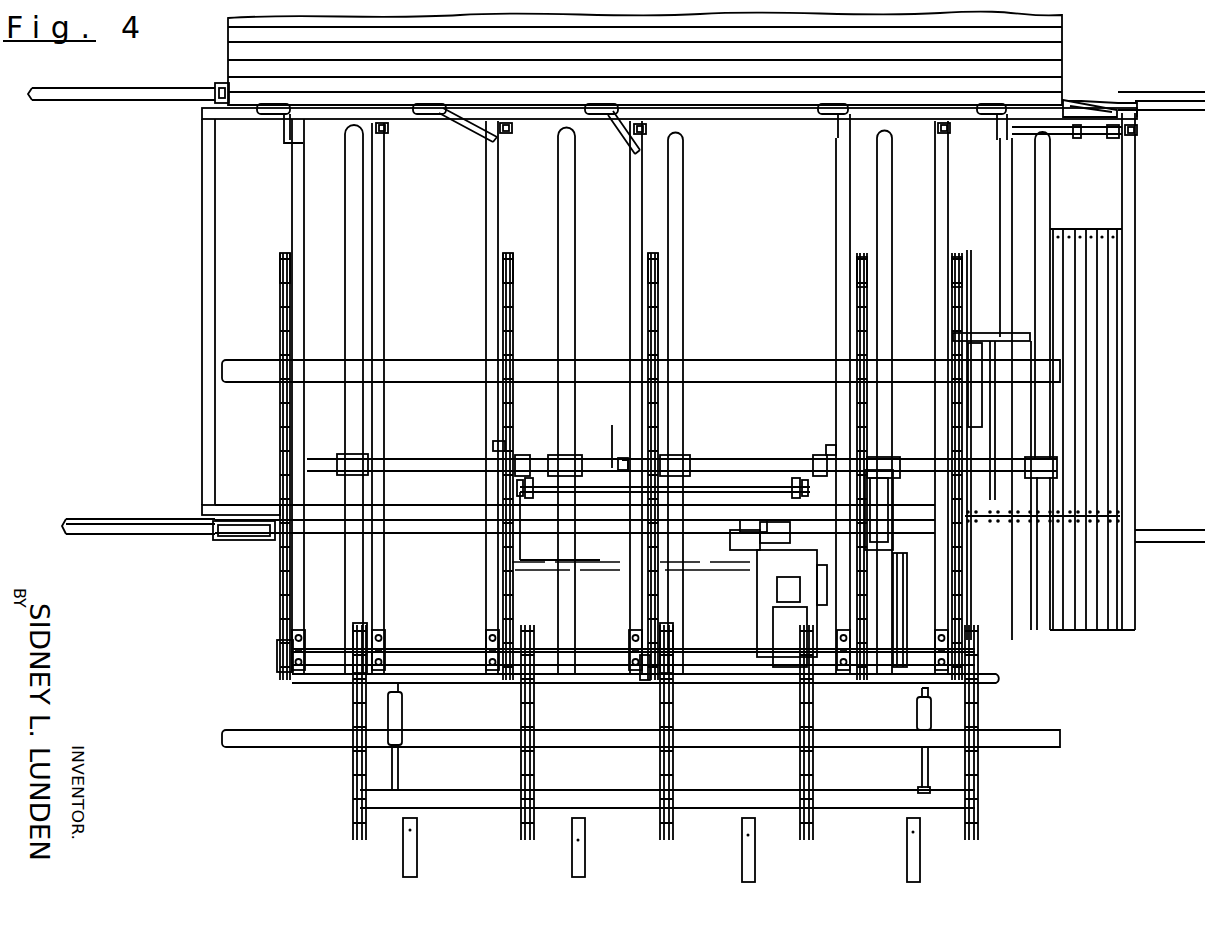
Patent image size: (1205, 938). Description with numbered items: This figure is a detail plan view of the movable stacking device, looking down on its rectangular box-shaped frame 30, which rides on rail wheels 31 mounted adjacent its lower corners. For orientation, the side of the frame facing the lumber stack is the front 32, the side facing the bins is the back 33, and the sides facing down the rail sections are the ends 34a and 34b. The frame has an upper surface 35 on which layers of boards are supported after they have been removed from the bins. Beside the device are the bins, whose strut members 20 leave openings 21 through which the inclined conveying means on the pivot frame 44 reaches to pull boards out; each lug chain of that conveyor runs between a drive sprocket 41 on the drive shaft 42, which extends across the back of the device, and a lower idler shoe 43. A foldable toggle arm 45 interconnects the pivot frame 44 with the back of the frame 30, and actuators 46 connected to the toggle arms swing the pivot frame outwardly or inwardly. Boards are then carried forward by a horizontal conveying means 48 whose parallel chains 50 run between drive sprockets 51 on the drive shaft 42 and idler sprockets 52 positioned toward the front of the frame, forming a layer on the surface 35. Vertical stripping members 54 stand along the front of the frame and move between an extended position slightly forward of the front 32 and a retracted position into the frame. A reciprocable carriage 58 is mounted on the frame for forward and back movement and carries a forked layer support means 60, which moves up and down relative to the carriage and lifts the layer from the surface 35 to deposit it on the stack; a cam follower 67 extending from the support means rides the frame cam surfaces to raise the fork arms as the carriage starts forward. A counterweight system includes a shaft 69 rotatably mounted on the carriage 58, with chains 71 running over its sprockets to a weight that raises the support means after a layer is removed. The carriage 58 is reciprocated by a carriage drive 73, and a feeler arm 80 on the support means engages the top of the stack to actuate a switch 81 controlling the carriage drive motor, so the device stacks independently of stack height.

The strut members 20 is at (755, 866).
The openings 21 is at (699, 859).
The frame 30 is at (205, 378).
The rail wheels 31 is at (226, 119).
The front 32 is at (756, 119).
The back 33 is at (430, 522).
The end 34a is at (198, 455).
The end 34b is at (1135, 410).
The upper surface 35 is at (300, 270).
The drive sprockets 41 is at (353, 636).
The drive shaft 42 is at (418, 652).
The lower idler shoe 43 is at (353, 840).
The pivot frame 44 is at (430, 802).
The foldable toggle arm 45 is at (395, 770).
The actuators 46 is at (402, 710).
The horizontal conveying means 48 is at (280, 455).
The parallel chains 50 is at (518, 337).
The drive sprockets 51 is at (278, 664).
The idler sprockets 52 is at (282, 270).
The vertical stripping members 54 is at (270, 114).
The reciprocable carriage 58 is at (762, 444).
The forked layer support means 60 is at (716, 453).
The cam follower 67 is at (500, 447).
The shaft 69 is at (714, 485).
The chains 71 is at (530, 490).
The carriage drive 73 is at (587, 582).
The feeler arm 80 is at (612, 430).
The switch 81 is at (620, 472).